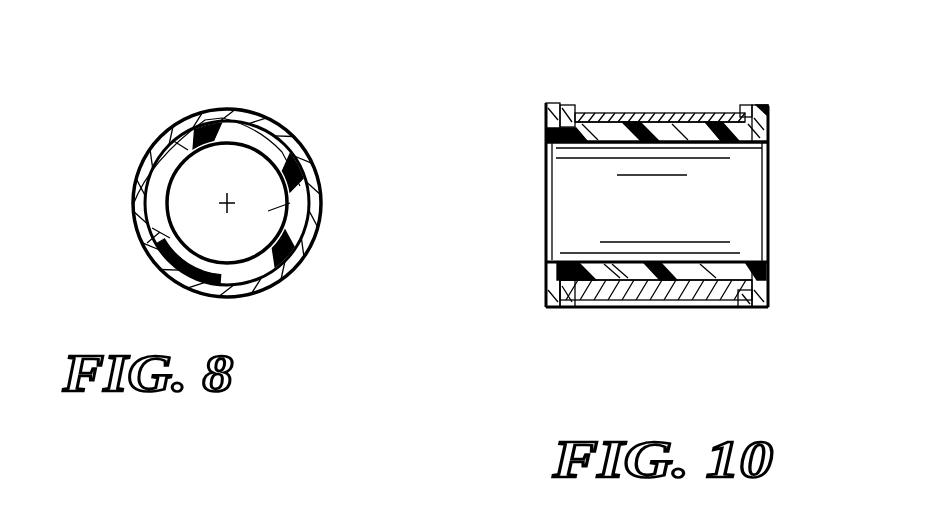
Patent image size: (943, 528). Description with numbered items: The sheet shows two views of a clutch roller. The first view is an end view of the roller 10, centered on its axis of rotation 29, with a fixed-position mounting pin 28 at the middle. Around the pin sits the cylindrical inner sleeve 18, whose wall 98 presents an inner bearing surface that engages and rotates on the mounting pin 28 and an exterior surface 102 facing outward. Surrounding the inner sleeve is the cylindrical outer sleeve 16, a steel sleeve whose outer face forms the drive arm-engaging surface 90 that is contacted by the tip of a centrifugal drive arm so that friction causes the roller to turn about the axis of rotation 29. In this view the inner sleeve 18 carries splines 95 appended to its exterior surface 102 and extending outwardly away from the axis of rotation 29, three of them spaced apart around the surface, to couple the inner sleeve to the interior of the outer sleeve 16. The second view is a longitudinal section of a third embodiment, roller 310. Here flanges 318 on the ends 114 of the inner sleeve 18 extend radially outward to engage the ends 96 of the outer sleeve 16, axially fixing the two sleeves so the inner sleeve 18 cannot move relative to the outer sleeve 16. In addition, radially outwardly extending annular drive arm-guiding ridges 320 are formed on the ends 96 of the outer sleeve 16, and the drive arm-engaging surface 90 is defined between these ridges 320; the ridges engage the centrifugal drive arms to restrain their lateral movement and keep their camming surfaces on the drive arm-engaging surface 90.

In FIG. 8, the roller 10 is at (108, 241).
In FIG. 8, the cylindrical outer sleeve 16 is at (300, 165).
In FIG. 10, the cylindrical outer sleeve 16 is at (653, 291).
In FIG. 8, the cylindrical inner sleeve 18 is at (277, 165).
In FIG. 8, the mounting pin 28 is at (272, 210).
In FIG. 8, the axis of rotation 29 is at (220, 206).
In FIG. 8, the drive arm-engaging surface 90 is at (137, 167).
In FIG. 10, the drive arm-engaging surface 90 is at (675, 105).
In FIG. 8, the splines 95 is at (227, 113).
In FIG. 10, the ends 96 is at (572, 112).
In FIG. 8, the wall 98 is at (185, 143).
In FIG. 8, the exterior surface 102 is at (293, 136).
In FIG. 10, the ends 114 is at (570, 141).
In FIG. 10, the roller 310 is at (553, 86).
In FIG. 10, the flanges 318 is at (543, 117).
In FIG. 10, the drive arm-guiding ridges 320 is at (564, 116).